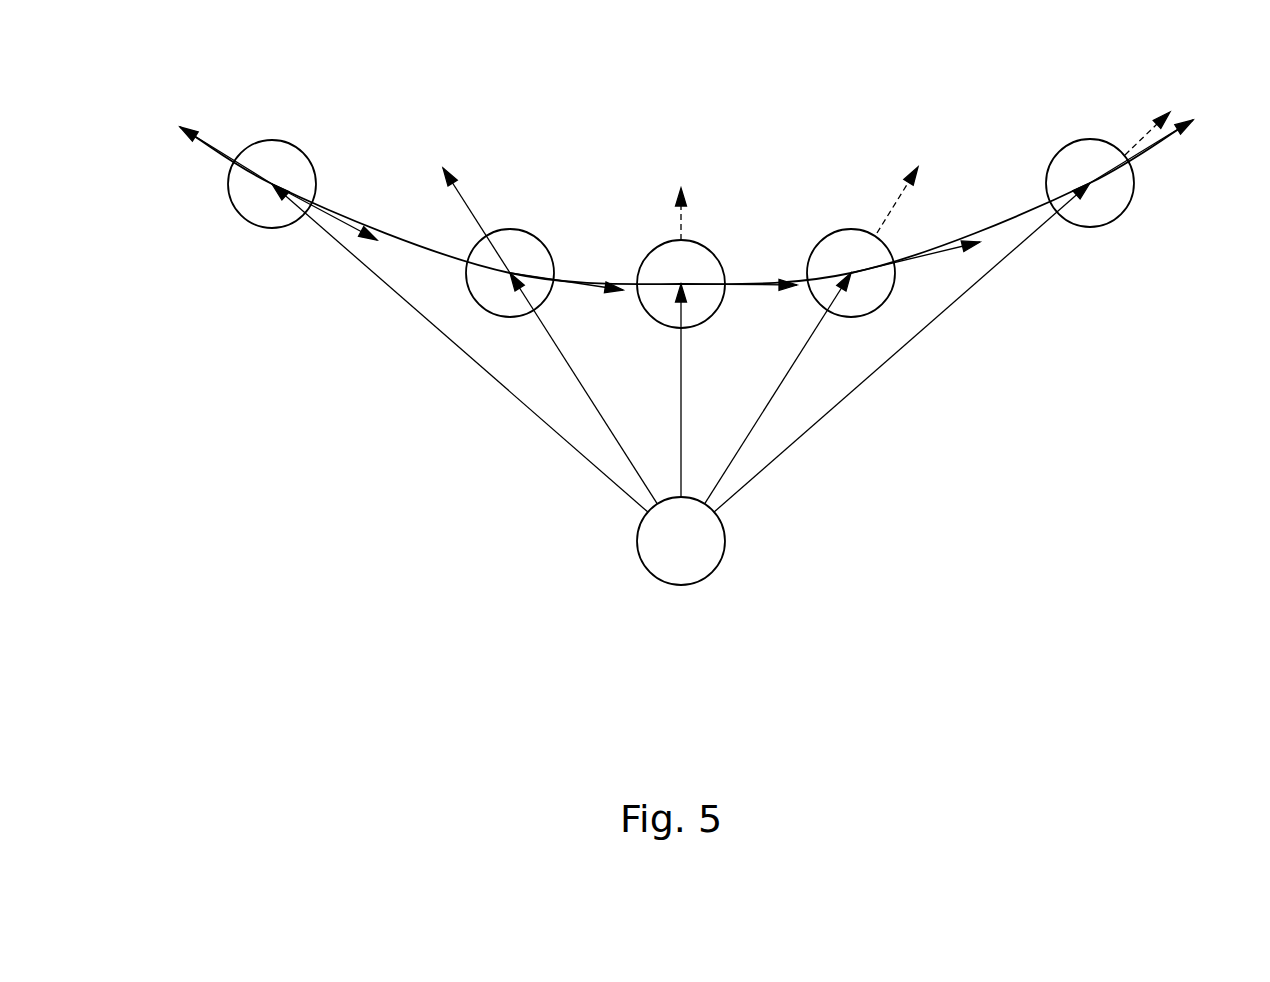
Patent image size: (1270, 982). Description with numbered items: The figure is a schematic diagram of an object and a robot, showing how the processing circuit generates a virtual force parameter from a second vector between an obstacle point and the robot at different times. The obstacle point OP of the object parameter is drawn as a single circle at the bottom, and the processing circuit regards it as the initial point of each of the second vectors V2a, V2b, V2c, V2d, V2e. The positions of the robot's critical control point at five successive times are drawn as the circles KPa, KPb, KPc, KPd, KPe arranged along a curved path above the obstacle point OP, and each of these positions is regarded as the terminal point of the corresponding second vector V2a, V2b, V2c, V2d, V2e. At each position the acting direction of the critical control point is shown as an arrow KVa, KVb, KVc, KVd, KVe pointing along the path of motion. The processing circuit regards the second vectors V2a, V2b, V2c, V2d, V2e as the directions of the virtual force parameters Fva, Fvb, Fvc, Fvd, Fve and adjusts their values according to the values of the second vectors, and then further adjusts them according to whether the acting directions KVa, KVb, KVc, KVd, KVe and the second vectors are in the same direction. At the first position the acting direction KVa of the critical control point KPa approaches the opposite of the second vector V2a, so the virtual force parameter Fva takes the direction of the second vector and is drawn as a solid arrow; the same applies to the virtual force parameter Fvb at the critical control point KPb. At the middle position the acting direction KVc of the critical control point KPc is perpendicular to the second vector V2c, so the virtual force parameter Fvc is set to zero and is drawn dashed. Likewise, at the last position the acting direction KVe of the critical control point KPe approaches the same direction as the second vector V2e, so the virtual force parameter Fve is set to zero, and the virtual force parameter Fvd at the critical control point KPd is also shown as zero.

The critical control point KPa is at (293, 140).
The critical control point KPb is at (533, 229).
The critical control point KPc is at (651, 241).
The critical control point KPd is at (827, 231).
The critical control point KPe is at (1103, 228).
The obstacle point OP is at (723, 550).
The second vector V2a is at (573, 450).
The second vector V2b is at (550, 357).
The second vector V2c is at (683, 365).
The second vector V2d is at (782, 382).
The second vector V2e is at (905, 350).
The acting direction KVa is at (347, 224).
The acting direction KVb is at (587, 288).
The acting direction KVc is at (770, 289).
The acting direction KVd is at (957, 250).
The acting direction KVe is at (1165, 140).
The virtual force parameter Fva is at (208, 143).
The virtual force parameter Fvb is at (467, 201).
The virtual force parameter Fvc is at (682, 221).
The virtual force parameter Fvd is at (897, 200).
The virtual force parameter Fve is at (1147, 130).